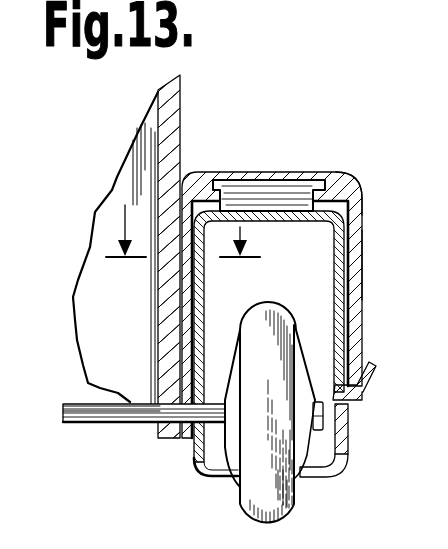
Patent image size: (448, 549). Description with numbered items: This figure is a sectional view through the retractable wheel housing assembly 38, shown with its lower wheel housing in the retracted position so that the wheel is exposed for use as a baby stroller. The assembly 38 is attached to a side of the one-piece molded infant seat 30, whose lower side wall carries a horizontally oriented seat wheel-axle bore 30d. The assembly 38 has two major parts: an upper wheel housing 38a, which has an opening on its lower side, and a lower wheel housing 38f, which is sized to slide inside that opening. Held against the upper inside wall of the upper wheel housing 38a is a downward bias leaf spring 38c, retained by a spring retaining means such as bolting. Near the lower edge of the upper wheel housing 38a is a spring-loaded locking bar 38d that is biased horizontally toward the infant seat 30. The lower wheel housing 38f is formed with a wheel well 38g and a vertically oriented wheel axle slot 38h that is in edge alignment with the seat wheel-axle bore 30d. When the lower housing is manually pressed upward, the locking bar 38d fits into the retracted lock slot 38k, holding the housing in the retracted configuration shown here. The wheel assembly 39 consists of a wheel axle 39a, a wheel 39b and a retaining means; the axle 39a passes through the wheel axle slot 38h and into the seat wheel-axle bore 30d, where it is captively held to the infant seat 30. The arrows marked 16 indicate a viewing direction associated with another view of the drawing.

The view direction arrow 16 is at (183, 243).
The infant seat 30 is at (182, 90).
The seat wheel-axle bore 30d is at (147, 426).
The retractable wheel housing assembly 38 is at (346, 164).
The upper wheel housing 38a is at (352, 204).
The downward bias leaf spring 38c is at (252, 187).
The spring-loaded locking bar 38d is at (374, 370).
The lower wheel housing 38f is at (342, 252).
The wheel well 38g is at (345, 462).
The wheel axle slot 38h is at (174, 398).
The retracted lock slot 38k is at (358, 404).
The wheel assembly 39 is at (224, 490).
The wheel axle 39a is at (82, 410).
The wheel 39b is at (294, 506).